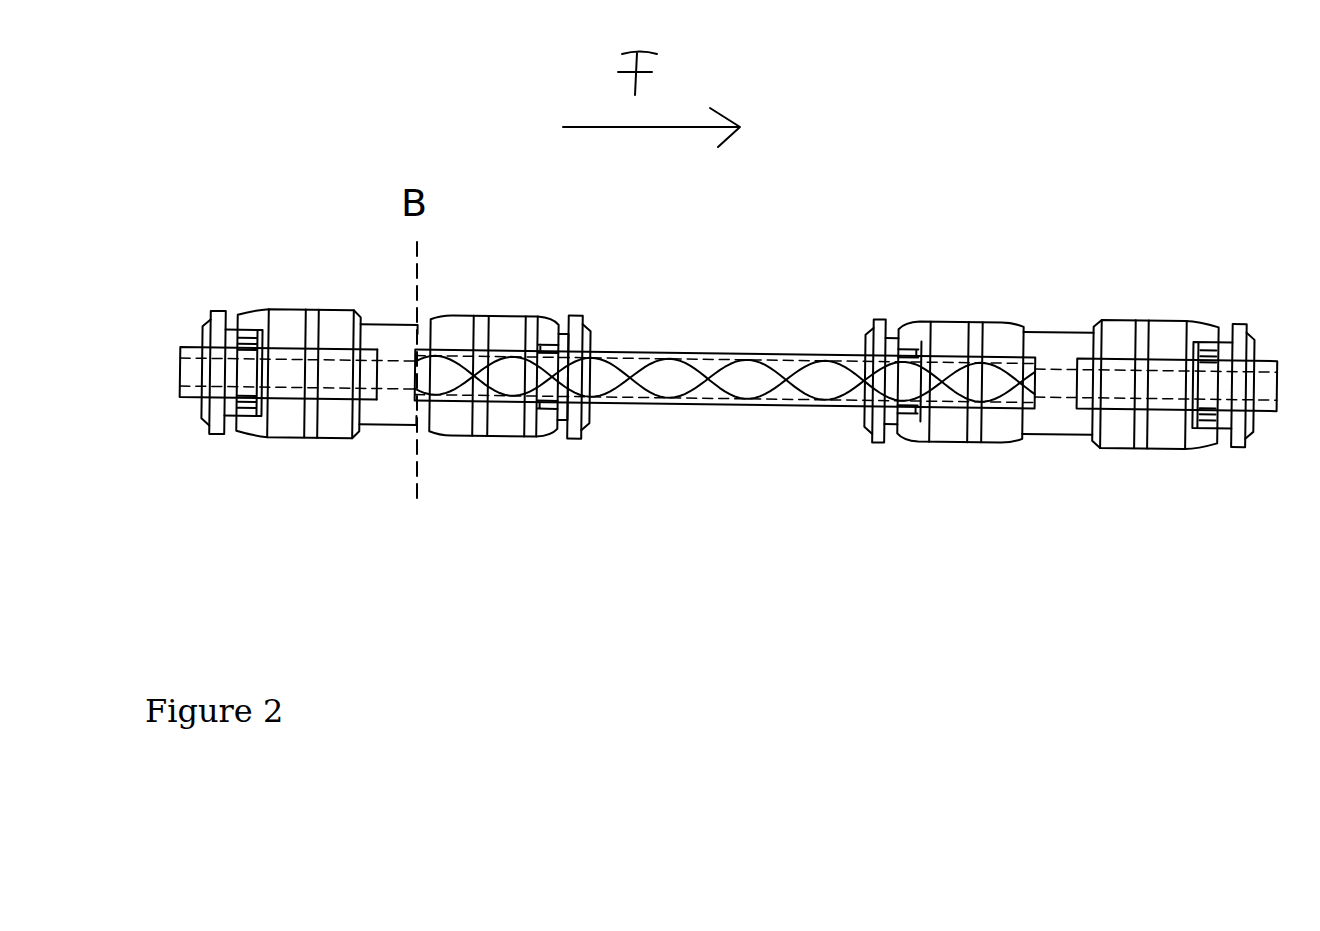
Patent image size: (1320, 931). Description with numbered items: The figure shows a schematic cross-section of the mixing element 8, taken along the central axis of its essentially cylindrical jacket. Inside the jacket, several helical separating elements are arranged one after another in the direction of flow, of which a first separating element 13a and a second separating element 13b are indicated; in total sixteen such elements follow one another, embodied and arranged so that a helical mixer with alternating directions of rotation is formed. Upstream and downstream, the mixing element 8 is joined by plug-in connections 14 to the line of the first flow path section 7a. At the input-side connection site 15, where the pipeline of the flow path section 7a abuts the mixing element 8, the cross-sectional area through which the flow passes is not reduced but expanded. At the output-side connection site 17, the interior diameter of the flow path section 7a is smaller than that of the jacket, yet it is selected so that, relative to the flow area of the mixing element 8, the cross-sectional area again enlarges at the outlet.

The first flow path section 7a is at (185, 402).
The mixing element 8 is at (1033, 438).
The first separating element 13a is at (440, 362).
The second separating element 13b is at (477, 367).
The plug-in connection 14 is at (338, 297).
The connection site at the input side 15 is at (410, 378).
The connection site at the output side 17 is at (1040, 390).